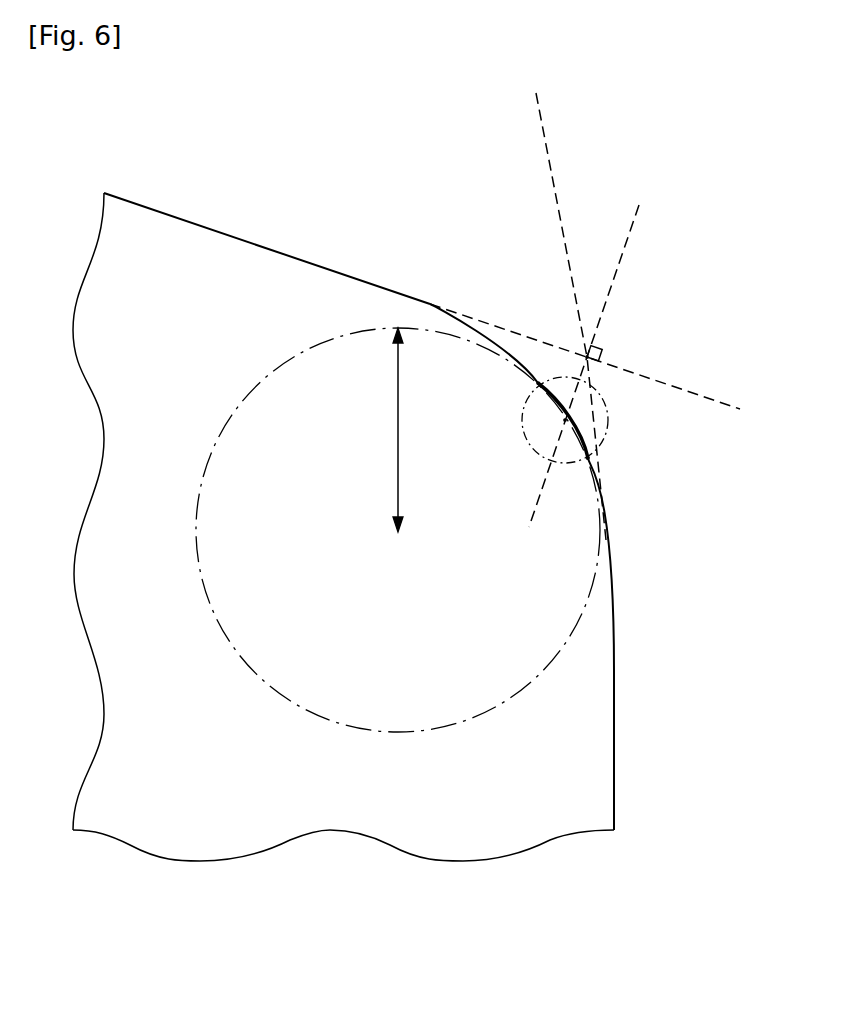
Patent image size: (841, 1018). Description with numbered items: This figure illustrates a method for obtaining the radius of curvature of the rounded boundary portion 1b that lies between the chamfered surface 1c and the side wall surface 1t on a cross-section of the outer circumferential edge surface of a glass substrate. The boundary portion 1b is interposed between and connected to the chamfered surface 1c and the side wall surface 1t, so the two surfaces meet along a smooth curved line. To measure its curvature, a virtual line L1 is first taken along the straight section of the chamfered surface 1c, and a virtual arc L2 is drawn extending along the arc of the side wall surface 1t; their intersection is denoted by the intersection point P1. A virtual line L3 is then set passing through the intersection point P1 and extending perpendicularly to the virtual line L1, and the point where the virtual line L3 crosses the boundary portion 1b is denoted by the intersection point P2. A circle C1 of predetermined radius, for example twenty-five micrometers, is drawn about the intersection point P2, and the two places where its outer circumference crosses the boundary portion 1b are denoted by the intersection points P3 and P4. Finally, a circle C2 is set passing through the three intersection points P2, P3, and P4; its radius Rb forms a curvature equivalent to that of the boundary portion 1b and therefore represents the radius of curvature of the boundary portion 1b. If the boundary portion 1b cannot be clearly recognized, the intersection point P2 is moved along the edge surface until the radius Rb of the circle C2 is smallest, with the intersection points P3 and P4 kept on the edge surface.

The chamfered surface 1c is at (290, 256).
The boundary portion 1b is at (582, 405).
The side wall surface 1t is at (613, 642).
The circle C2 is at (368, 329).
The radius of circle C2 Rb is at (385, 430).
The virtual line L1 is at (702, 392).
The virtual arc L2 is at (566, 237).
The virtual line L3 is at (636, 222).
The intersection point P1 is at (583, 354).
The intersection point P2 is at (568, 419).
The intersection point P3 is at (538, 381).
The intersection point P4 is at (590, 458).
The circle C1 is at (609, 419).